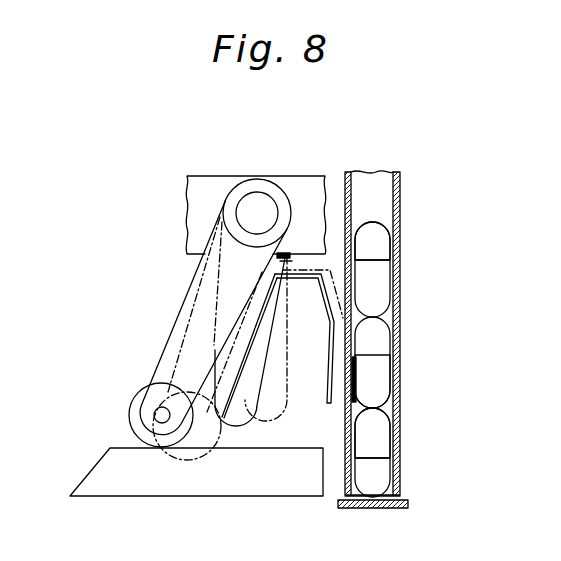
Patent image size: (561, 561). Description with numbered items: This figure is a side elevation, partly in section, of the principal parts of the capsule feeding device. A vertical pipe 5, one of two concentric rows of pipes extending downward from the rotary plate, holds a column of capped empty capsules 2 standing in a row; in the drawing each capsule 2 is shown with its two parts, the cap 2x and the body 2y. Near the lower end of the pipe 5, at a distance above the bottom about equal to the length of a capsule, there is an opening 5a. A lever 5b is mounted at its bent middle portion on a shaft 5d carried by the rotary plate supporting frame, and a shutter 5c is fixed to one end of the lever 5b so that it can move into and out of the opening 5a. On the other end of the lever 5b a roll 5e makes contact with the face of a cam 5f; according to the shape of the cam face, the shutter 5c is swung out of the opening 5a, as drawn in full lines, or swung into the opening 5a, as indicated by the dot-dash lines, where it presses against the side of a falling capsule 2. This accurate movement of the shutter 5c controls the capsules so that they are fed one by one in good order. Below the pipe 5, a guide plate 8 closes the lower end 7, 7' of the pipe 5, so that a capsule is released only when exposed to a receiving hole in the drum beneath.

The capped empty capsule 2 is at (395, 365).
The capsule cap 2x is at (377, 335).
The capsule body 2y is at (377, 383).
The pipe 5 is at (400, 222).
The opening 5a is at (350, 390).
The lever 5b is at (216, 307).
The shutter 5c is at (325, 357).
The shaft 5d is at (250, 208).
The roll 5e is at (133, 397).
The cam 5f is at (181, 477).
The lower end of the pipe 7 is at (415, 476).
The tube bottom 7' is at (401, 482).
The guide plate 8 is at (409, 503).